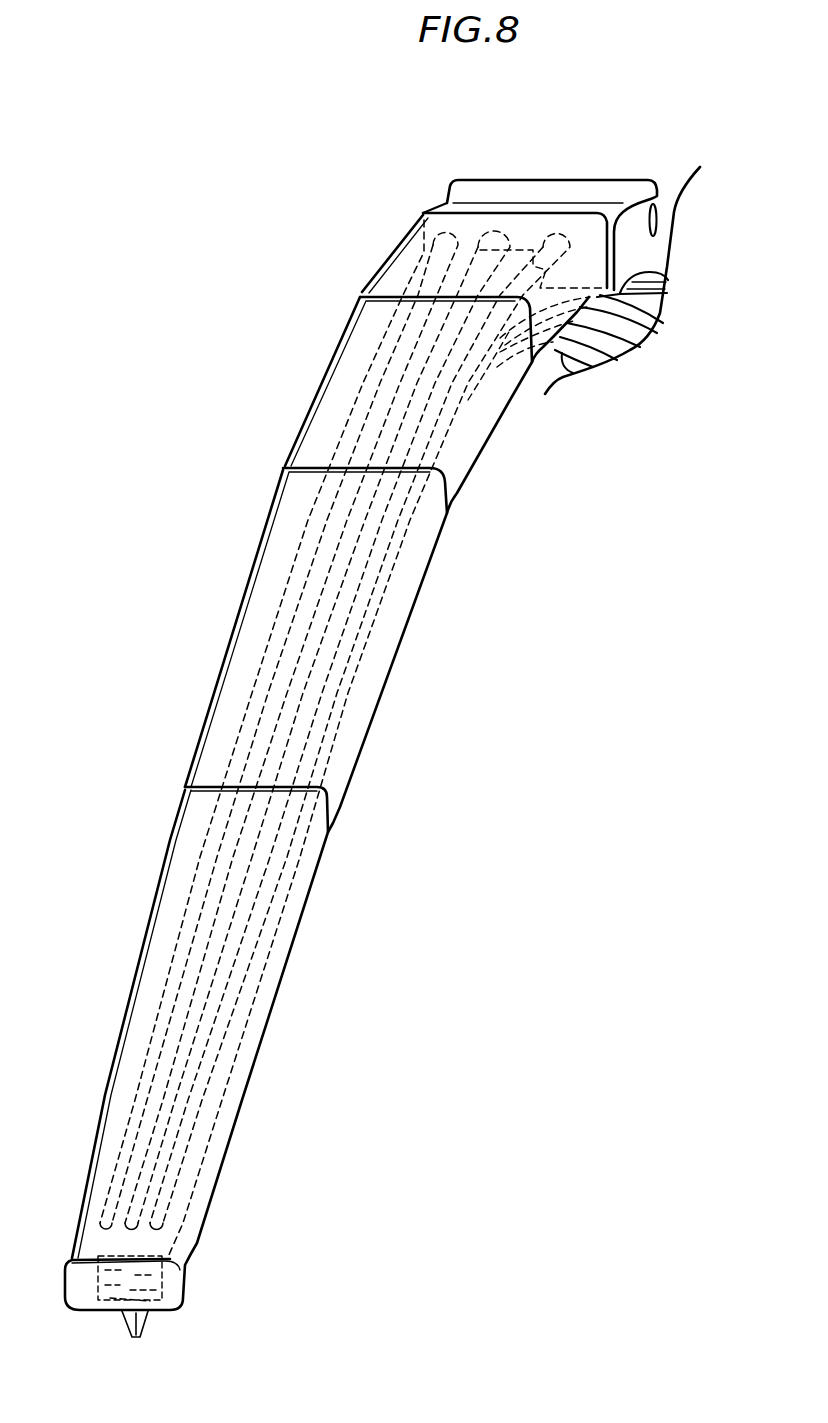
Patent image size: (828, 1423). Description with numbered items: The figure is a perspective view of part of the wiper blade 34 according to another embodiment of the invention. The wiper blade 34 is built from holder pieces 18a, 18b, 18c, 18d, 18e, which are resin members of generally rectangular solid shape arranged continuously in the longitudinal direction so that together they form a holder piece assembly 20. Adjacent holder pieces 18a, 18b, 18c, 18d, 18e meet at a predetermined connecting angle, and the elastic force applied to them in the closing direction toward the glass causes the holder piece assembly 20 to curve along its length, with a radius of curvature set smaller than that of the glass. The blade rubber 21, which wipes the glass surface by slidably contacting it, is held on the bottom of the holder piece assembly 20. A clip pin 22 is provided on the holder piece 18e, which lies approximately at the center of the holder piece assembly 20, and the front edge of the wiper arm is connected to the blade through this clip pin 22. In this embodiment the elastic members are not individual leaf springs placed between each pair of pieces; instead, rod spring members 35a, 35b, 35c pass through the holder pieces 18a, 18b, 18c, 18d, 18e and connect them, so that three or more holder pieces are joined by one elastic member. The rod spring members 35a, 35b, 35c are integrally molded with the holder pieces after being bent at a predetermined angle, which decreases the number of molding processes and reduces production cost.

The holder piece 18a is at (133, 988).
The holder piece 18b is at (210, 703).
The holder piece 18c is at (318, 378).
The holder piece 18d is at (397, 246).
The holder piece 18e is at (558, 183).
The holder piece assembly 20 is at (155, 884).
The blade rubber 21 is at (213, 1120).
The clip pin 22 is at (658, 206).
The wiper blade 34 is at (283, 290).
The rod spring member 35a is at (300, 567).
The rod spring member 35b is at (345, 566).
The rod spring member 35c is at (353, 624).